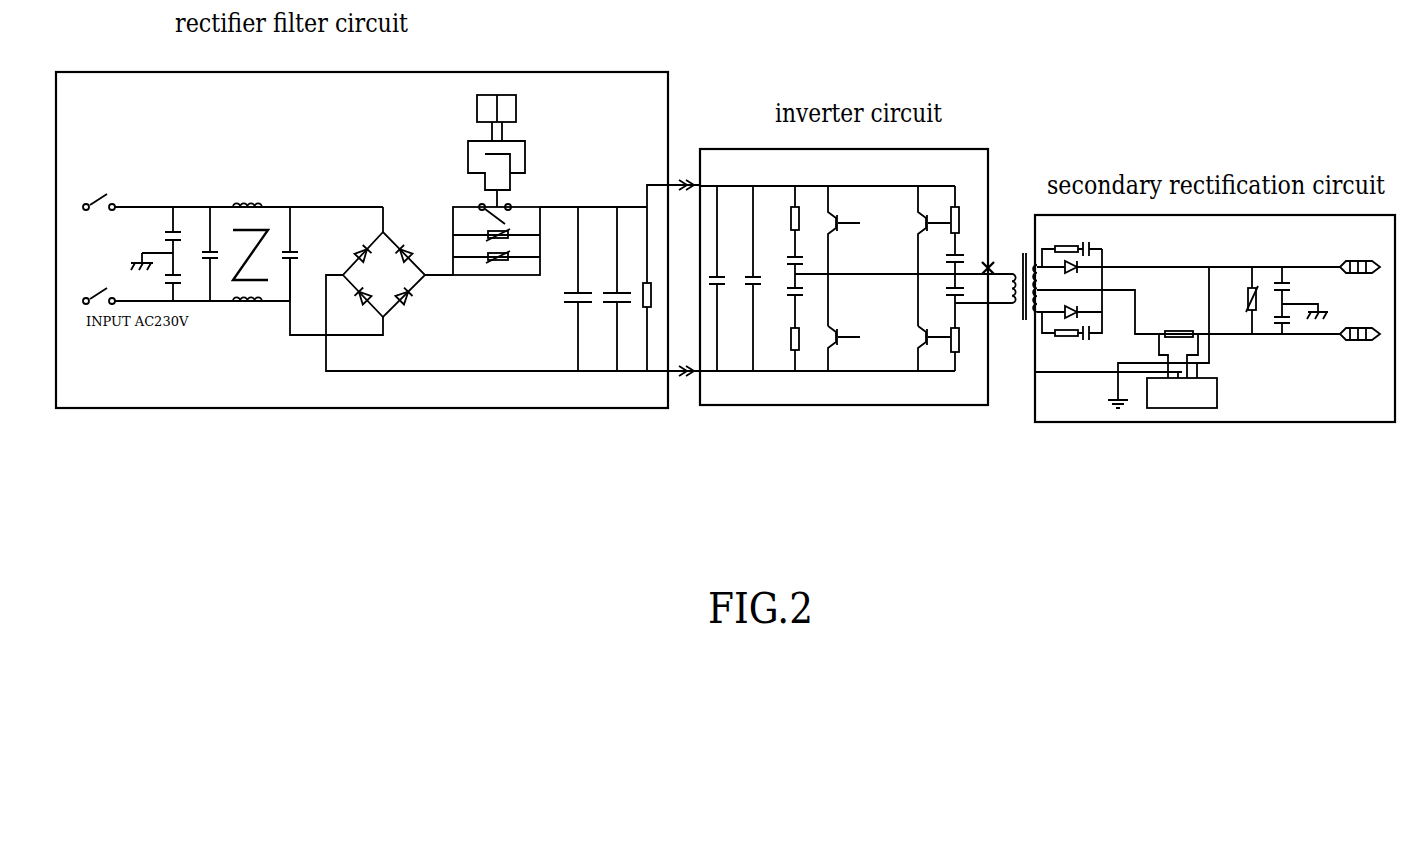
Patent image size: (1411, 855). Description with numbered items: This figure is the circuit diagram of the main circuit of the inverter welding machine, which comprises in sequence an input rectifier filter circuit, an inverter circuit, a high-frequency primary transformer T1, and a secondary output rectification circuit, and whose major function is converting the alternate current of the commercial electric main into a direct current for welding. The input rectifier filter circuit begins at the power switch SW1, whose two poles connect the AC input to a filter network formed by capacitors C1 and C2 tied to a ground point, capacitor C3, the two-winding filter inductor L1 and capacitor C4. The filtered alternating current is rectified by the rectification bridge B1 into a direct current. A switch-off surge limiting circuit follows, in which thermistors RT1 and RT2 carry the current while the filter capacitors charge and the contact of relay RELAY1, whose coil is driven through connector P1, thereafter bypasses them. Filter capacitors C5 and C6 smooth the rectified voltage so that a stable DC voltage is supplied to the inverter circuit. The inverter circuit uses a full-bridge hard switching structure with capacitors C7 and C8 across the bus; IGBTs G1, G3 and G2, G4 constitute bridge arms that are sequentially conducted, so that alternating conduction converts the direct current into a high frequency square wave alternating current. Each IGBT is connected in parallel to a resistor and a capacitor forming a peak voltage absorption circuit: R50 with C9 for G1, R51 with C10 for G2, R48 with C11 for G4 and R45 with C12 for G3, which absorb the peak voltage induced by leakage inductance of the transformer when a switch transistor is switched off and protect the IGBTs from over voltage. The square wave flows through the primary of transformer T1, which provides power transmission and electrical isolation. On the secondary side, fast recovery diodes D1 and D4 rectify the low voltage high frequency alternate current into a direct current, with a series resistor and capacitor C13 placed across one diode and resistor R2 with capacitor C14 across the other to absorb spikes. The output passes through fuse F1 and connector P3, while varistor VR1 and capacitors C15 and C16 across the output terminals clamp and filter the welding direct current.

The power switch SW1 is at (95, 241).
The filter capacitor C1 is at (181, 241).
The filter capacitor C2 is at (164, 277).
The filter capacitor C3 is at (215, 254).
The filter capacitor C4 is at (298, 254).
The filter inductor L1 is at (252, 269).
The rectification bridge B1 is at (383, 273).
The relay RELAY1 is at (522, 198).
The relay control connector P1 is at (496, 100).
The thermistor RT1 is at (496, 262).
The thermistor RT2 is at (496, 240).
The filter capacitor C5 is at (573, 289).
The filter capacitor C6 is at (612, 289).
The capacitor C7 is at (713, 278).
The capacitor C8 is at (748, 278).
The resistor R50 is at (781, 221).
The capacitor C9 is at (784, 268).
The capacitor C10 is at (781, 308).
The resistor R51 is at (781, 349).
The IGBT G1 is at (840, 245).
The IGBT G2 is at (840, 359).
The IGBT G3 is at (928, 359).
The IGBT G4 is at (928, 245).
The resistor R48 is at (968, 220).
The capacitor C11 is at (966, 265).
The capacitor C12 is at (967, 308).
The resistor R45 is at (968, 349).
The high-frequency primary transformer T1 is at (1009, 273).
The fast recovery diode D1 is at (1075, 273).
The fast recovery diode D4 is at (1075, 305).
The capacitor C13 is at (1090, 243).
The resistor R2 is at (1062, 332).
The capacitor C14 is at (1096, 341).
The fuse F1 is at (1184, 345).
The output connector P3 is at (1172, 393).
The varistor VR1 is at (1261, 300).
The capacitor C15 is at (1301, 293).
The capacitor C16 is at (1281, 336).